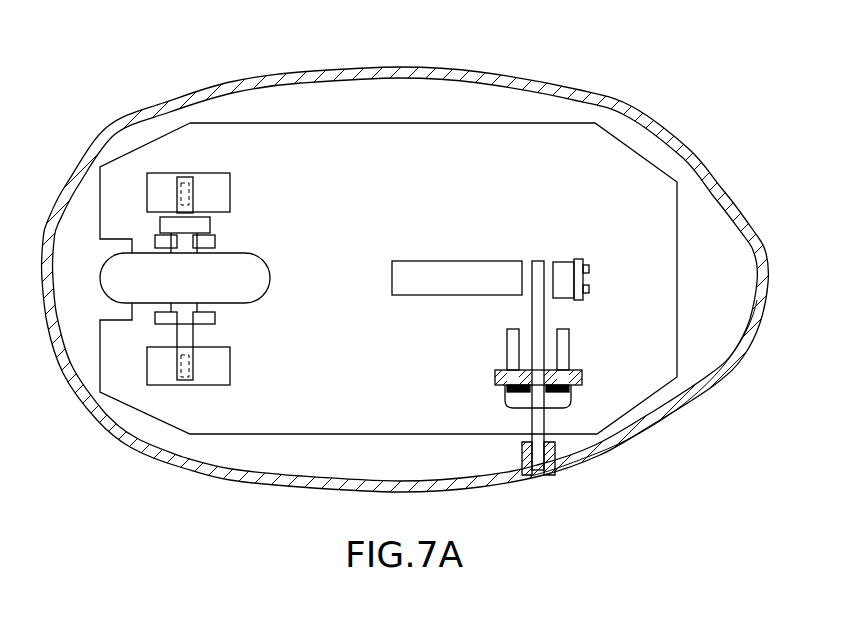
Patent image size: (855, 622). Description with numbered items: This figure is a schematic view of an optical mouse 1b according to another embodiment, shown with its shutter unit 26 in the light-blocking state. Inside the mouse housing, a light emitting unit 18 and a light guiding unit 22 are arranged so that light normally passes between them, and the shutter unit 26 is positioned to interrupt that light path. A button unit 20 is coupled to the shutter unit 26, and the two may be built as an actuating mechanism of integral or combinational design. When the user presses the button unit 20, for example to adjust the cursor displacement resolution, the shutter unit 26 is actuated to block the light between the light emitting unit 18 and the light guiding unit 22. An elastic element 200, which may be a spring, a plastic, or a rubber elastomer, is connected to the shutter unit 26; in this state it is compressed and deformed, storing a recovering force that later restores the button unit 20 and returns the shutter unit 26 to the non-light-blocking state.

The optical mouse 1b is at (757, 46).
The light guiding unit 22 is at (457, 268).
The light emitting unit 18 is at (567, 270).
The shutter unit 26 is at (540, 277).
The elastic element 200 is at (572, 392).
The button unit 20 is at (548, 468).